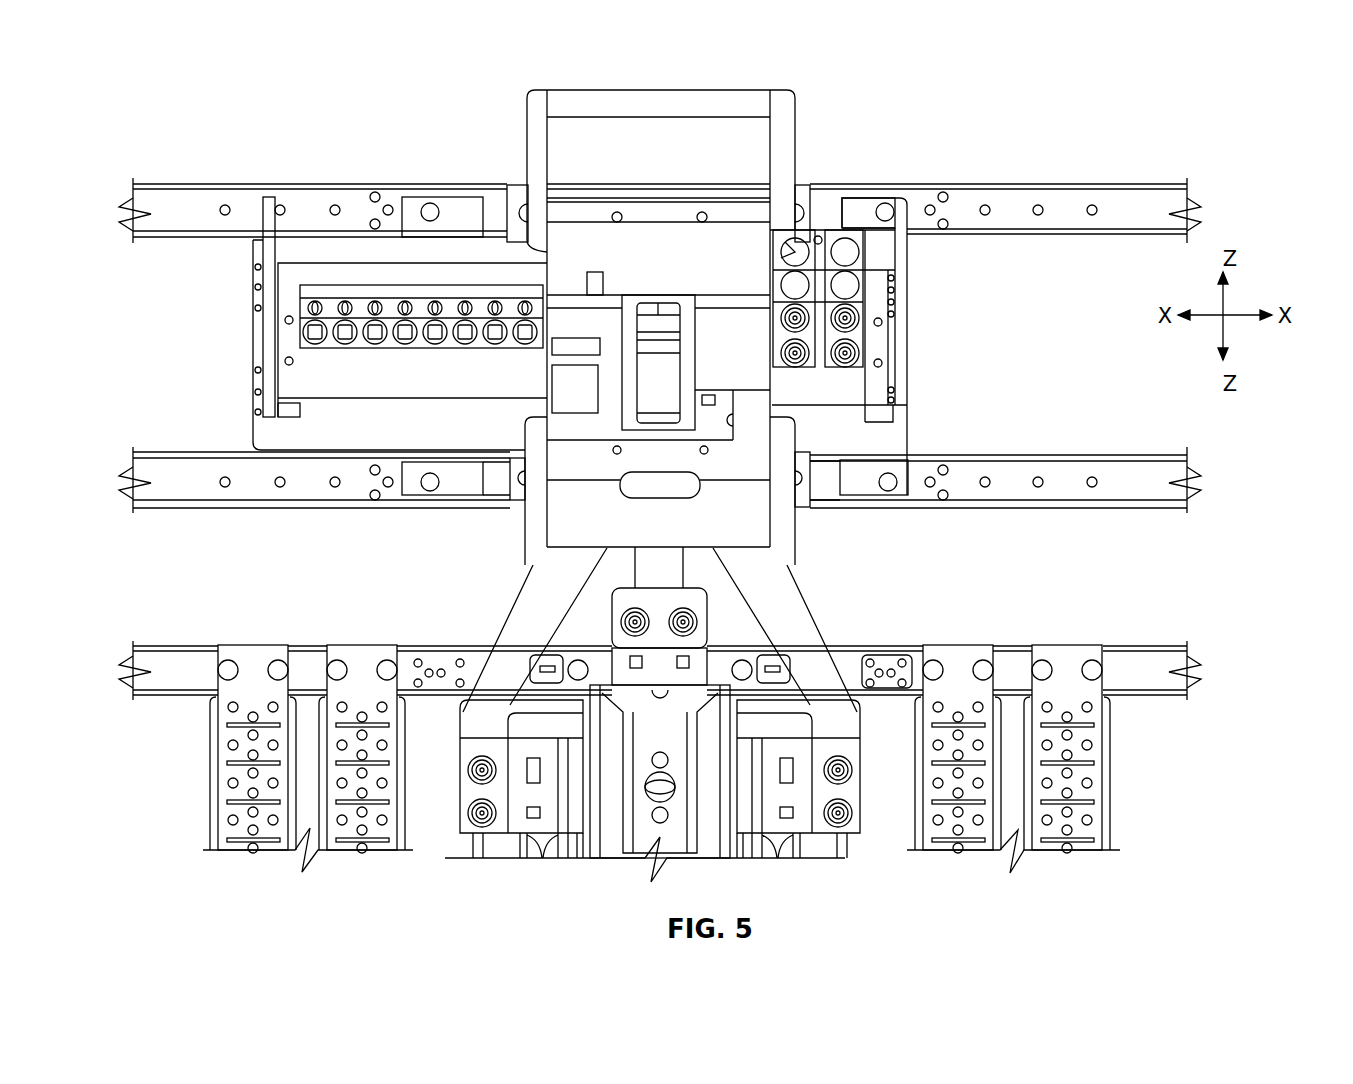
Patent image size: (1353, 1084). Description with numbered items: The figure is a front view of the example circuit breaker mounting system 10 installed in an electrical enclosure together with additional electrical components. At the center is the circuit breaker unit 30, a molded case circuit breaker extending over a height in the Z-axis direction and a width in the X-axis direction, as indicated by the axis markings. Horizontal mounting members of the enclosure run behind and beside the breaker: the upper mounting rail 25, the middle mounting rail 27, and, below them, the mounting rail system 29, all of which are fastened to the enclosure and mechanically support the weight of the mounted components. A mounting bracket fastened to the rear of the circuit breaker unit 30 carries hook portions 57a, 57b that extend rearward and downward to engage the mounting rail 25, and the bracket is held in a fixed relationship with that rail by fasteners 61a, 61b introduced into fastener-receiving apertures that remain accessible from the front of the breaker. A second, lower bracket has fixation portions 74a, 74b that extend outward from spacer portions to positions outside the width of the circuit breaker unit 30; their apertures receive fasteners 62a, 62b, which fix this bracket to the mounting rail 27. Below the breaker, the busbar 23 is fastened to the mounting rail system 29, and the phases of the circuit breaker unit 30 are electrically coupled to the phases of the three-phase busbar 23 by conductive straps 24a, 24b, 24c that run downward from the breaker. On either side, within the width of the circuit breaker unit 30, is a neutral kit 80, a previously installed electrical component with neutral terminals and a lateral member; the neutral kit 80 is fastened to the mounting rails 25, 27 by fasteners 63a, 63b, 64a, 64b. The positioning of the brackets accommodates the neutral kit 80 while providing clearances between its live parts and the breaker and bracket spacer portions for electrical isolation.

The circuit breaker mounting system 10 is at (1184, 582).
The busbar 23 is at (600, 678).
The conductive strap 24a is at (500, 630).
The conductive strap 24b is at (690, 568).
The conductive strap 24c is at (815, 635).
The mounting rail 25 is at (992, 182).
The mounting rail 27 is at (992, 455).
The mounting rail system 29 is at (998, 642).
The circuit breaker unit 30 is at (516, 523).
The hook portion 57a is at (814, 172).
The hook portion 57b is at (514, 172).
The fastener 61a is at (803, 213).
The fastener 61b is at (512, 214).
The fastener 62a is at (806, 462).
The fastener 62b is at (513, 462).
The fastener 63a is at (888, 203).
The fastener 63b is at (418, 212).
The fastener 64a is at (888, 491).
The fastener 64b is at (430, 491).
The fixation portion 74a is at (800, 500).
The fixation portion 74b is at (513, 498).
The neutral kit 80 is at (242, 338).